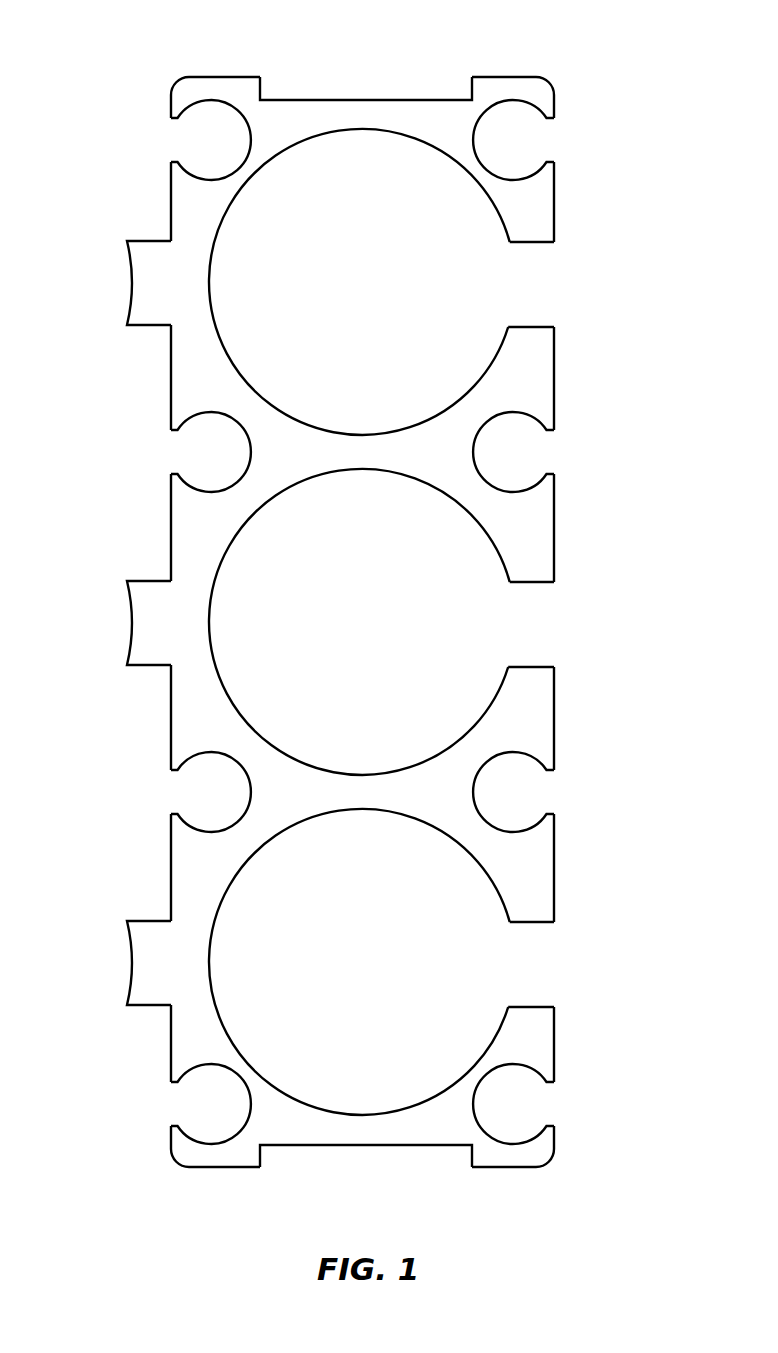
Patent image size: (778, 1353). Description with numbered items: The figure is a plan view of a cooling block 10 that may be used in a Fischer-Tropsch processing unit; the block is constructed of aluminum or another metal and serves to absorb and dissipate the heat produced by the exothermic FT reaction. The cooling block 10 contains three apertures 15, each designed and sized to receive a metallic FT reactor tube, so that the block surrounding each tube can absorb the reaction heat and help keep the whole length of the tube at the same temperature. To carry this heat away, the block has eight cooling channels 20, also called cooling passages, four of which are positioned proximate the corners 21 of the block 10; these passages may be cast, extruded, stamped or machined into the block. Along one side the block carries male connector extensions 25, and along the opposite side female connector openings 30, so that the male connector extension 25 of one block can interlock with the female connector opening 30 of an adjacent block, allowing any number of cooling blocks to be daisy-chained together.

The cooling block 10 is at (427, 110).
The aperture 15 is at (434, 147).
The cooling channel 20 is at (192, 106).
The corner 21 is at (172, 73).
The male connector extension 25 is at (143, 282).
The female connector opening 30 is at (534, 246).